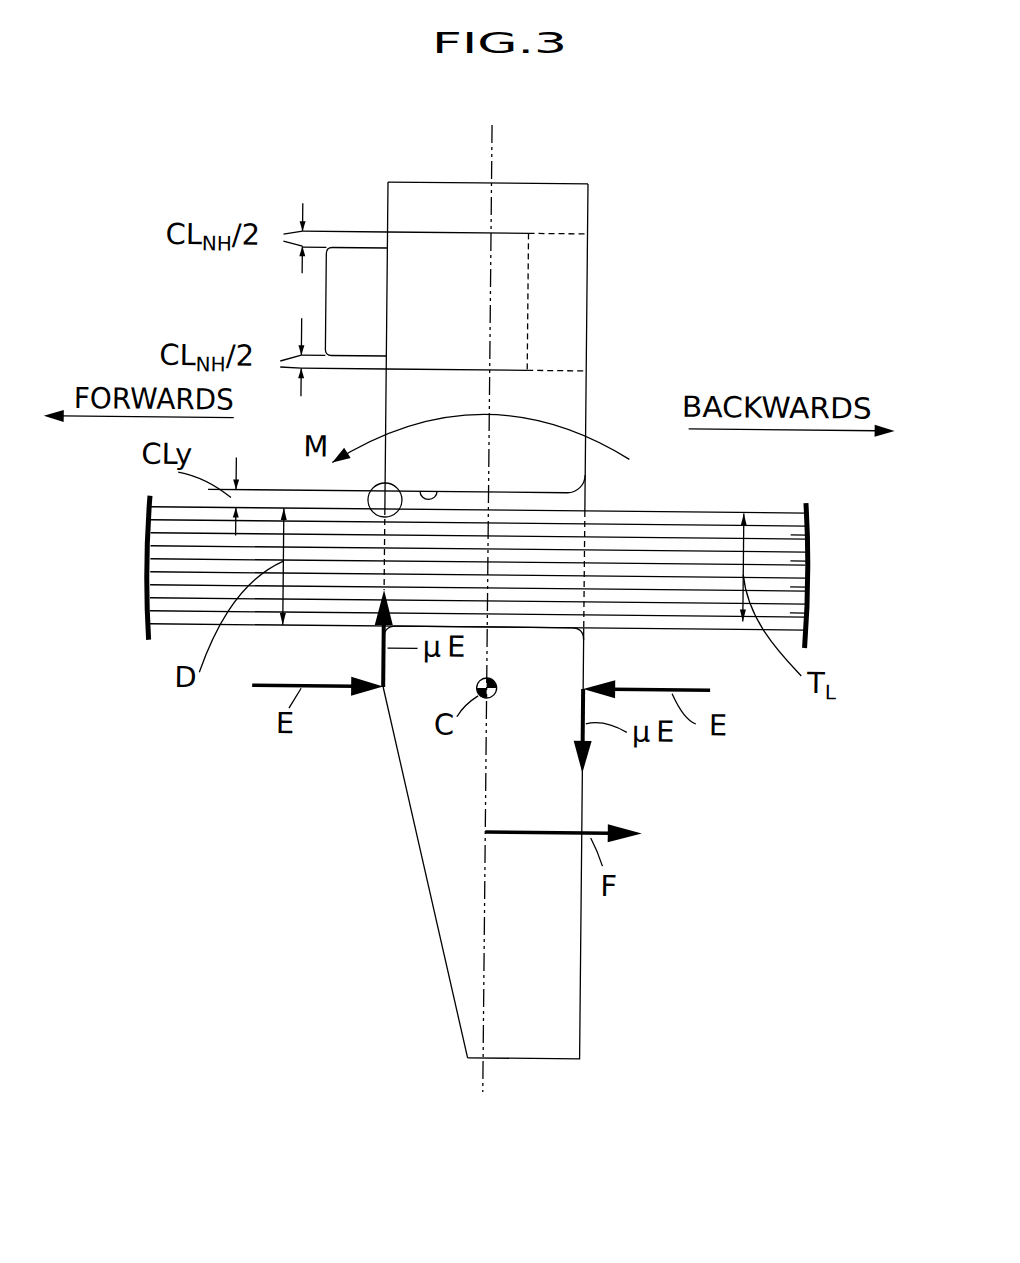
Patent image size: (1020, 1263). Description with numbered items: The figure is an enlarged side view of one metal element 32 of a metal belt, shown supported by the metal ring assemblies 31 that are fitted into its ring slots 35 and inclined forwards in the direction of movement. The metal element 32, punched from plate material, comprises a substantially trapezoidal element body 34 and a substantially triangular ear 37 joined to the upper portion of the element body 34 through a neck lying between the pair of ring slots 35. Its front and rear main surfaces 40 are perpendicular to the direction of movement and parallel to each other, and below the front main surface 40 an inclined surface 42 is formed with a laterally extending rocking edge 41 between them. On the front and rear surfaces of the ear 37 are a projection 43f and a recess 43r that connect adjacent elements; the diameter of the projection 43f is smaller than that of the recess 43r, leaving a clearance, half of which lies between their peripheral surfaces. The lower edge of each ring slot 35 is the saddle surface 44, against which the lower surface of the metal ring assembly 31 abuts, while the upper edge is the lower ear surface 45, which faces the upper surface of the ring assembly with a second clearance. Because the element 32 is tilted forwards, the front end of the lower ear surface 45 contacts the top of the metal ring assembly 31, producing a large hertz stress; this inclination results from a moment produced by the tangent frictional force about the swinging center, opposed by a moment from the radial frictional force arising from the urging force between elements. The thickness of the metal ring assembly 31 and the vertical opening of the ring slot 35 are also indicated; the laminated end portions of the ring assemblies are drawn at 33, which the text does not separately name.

The metal ring assembly 31 is at (709, 507).
The metal element 32 is at (606, 268).
The track end rollers 33 is at (806, 610).
The element body 34 is at (432, 802).
The ring slot 35 is at (540, 504).
The ear 37 is at (522, 195).
The main surface 40 is at (384, 398).
The rocking edge 41 is at (381, 692).
The inclined surface 42 is at (432, 907).
The projection 43f is at (323, 306).
The recess 43r is at (528, 302).
The saddle surface 44 is at (512, 627).
The lower ear surface 45 is at (437, 491).